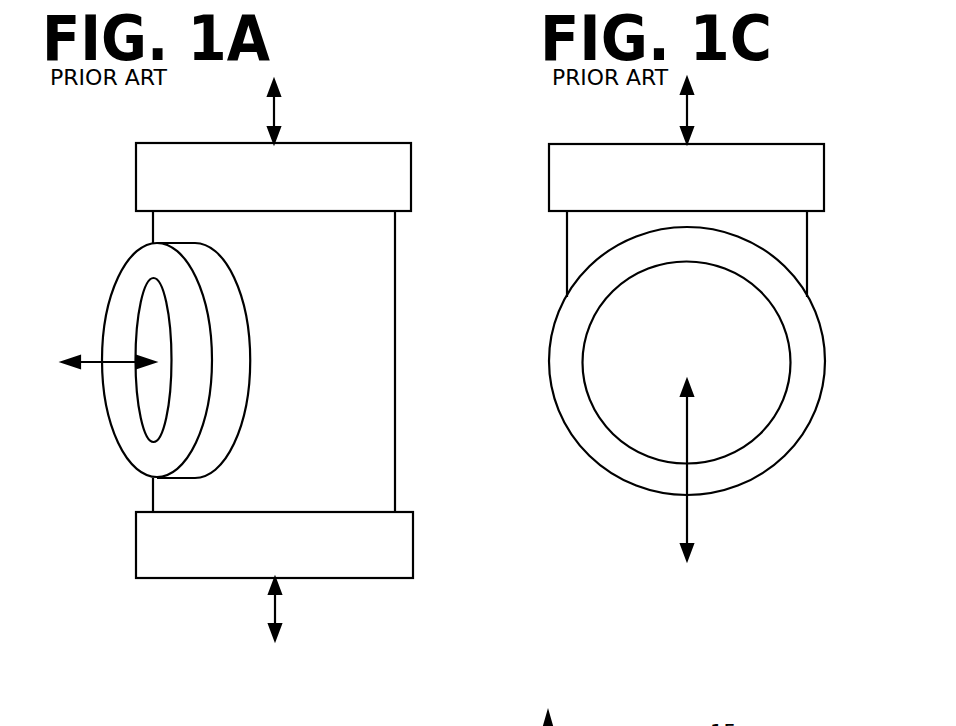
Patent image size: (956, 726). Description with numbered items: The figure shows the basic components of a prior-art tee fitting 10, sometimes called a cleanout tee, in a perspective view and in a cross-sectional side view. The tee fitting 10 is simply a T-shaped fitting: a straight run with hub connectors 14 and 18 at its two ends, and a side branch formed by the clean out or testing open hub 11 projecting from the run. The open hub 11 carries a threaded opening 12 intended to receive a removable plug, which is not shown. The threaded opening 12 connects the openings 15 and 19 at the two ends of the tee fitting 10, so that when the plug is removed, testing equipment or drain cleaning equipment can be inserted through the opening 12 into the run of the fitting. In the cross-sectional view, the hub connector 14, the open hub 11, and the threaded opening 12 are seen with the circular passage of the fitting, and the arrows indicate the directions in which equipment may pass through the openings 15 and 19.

In FIG. 1A, the tee fitting 10 is at (395, 362).
In FIG. 1A, the clean out or testing open hub 11 is at (127, 297).
In FIG. 1C, the clean out or testing open hub 11 is at (549, 177).
In FIG. 1A, the threaded opening 12 is at (155, 378).
In FIG. 1C, the threaded opening 12 is at (738, 143).
In FIG. 1A, the hub connector 14 is at (136, 177).
In FIG. 1A, the opening 15 is at (312, 143).
In FIG. 1A, the hub connector 18 is at (413, 545).
In FIG. 1C, the hub connector 18 is at (605, 449).
In FIG. 1A, the opening 19 is at (343, 578).
In FIG. 1C, the opening 19 is at (652, 411).